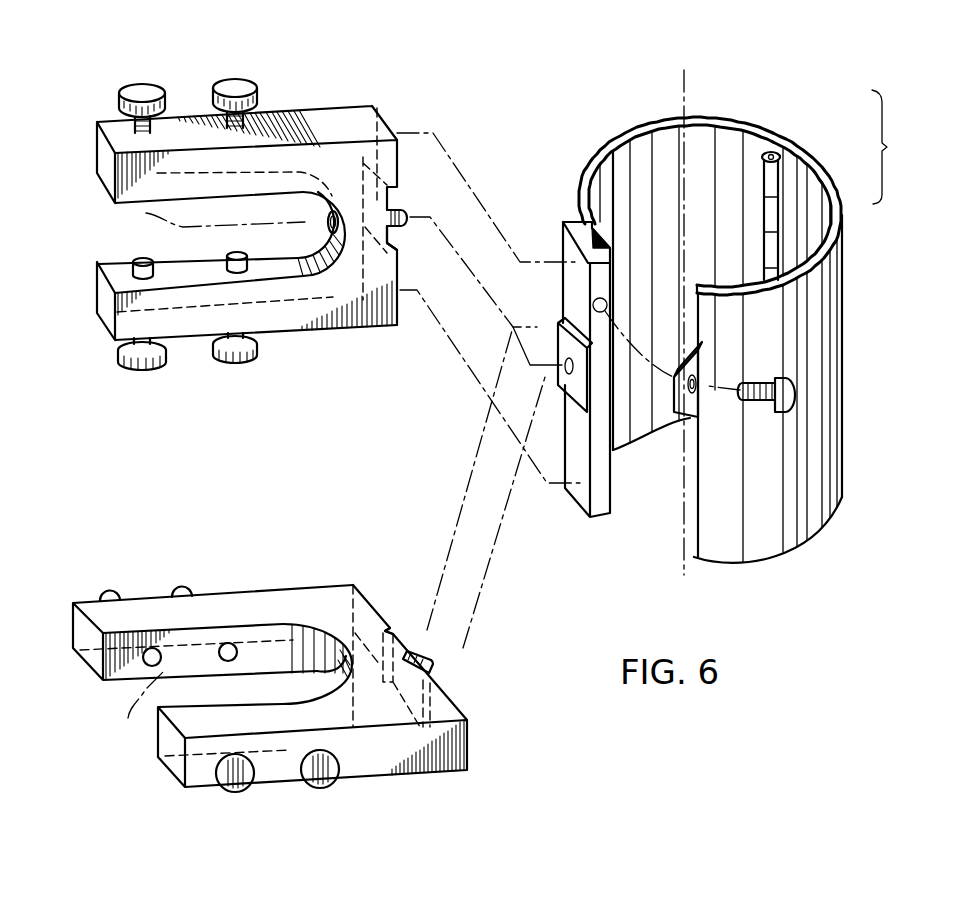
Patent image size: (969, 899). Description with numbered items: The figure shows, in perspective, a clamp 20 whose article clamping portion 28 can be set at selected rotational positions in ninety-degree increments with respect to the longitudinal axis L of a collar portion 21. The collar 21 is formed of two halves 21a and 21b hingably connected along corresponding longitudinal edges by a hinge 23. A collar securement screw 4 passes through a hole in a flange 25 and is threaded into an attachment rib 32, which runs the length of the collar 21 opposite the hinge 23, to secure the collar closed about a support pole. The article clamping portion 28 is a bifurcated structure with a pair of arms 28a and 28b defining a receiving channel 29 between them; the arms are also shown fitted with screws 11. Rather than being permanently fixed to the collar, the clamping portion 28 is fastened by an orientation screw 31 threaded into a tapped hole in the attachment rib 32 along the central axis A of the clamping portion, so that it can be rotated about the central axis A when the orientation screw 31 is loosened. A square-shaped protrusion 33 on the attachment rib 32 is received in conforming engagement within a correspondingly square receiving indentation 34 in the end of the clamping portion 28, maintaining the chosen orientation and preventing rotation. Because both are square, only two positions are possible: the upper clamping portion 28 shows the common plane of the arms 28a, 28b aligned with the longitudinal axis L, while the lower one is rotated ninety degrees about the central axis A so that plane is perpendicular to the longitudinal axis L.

The collar securement screw 4 is at (795, 398).
The clamping bolts 11 is at (232, 78).
The clamp 20 is at (609, 63).
The collar portion 21 is at (757, 326).
The collar half 21a is at (742, 134).
The collar half 21b is at (838, 218).
The hinge 23 is at (780, 158).
The flange 25 is at (703, 360).
The article clamping portion 28 is at (300, 110).
The arm 28a is at (107, 160).
The arm 28b is at (107, 300).
The receiving channel 29 is at (135, 246).
The orientation screw 31 is at (410, 208).
The attachment rib 32 is at (577, 455).
The square-shaped protrusion 33 is at (557, 340).
The receiving indentation 34 is at (393, 246).
The central axis A is at (210, 480).
The longitudinal axis L is at (685, 97).